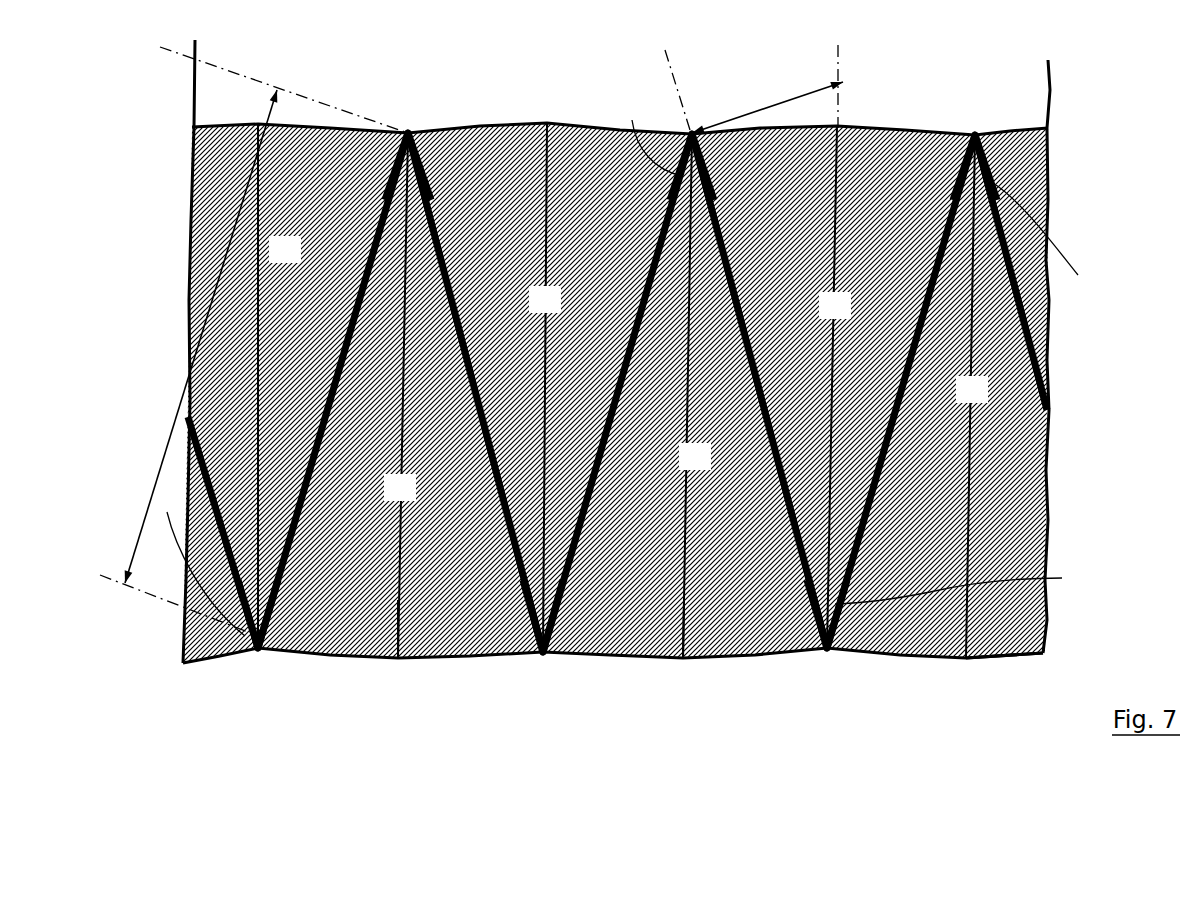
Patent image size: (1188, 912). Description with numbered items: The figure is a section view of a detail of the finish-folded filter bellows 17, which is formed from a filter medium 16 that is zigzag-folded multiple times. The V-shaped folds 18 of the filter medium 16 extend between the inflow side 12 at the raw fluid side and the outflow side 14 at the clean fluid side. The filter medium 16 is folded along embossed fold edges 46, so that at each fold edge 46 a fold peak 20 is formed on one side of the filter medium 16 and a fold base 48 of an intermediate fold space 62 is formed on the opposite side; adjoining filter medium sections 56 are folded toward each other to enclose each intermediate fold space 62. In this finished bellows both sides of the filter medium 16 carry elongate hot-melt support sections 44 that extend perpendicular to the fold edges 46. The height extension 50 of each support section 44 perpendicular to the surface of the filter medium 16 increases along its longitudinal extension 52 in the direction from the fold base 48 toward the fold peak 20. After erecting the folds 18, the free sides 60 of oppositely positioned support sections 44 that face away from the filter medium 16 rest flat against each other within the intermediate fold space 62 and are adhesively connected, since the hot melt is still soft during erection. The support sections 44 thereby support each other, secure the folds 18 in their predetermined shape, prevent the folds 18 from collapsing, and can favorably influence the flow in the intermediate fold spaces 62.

The inflow side 12 is at (522, 85).
The outflow side 14 is at (630, 690).
The filter medium 16 is at (1050, 388).
The filter bellows 17 is at (1108, 95).
The folds 18 is at (379, 663).
The fold peak 20 is at (405, 132).
The support sections 44 is at (188, 220).
The fold edges 46 is at (410, 132).
The fold base 48 is at (625, 365).
The height extension 50 is at (762, 102).
The longitudinal extension 52 is at (177, 396).
The filter medium sections 56 is at (333, 368).
The free sides 60 is at (545, 126).
The intermediate fold space 62 is at (271, 260).